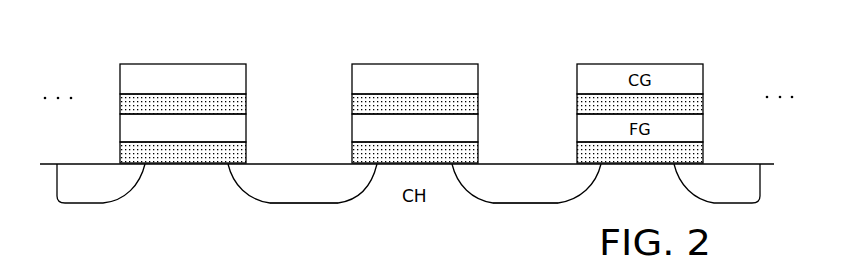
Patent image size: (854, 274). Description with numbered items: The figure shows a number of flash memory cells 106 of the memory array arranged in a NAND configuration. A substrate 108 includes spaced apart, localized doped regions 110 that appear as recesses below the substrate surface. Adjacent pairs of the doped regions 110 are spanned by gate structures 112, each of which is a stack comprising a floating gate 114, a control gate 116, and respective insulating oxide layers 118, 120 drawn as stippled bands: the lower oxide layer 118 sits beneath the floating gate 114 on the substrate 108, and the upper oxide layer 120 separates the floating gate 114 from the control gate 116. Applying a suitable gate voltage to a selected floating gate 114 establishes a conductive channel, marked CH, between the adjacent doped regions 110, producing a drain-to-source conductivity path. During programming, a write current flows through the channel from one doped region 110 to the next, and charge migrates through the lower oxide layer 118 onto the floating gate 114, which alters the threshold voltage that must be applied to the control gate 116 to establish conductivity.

The flash memory cells 106 is at (170, 27).
The substrate 108 is at (192, 211).
The doped regions 110 is at (308, 204).
The gate structures 112 is at (427, 84).
The floating gate 114 is at (352, 128).
The control gate 116 is at (415, 63).
The lower oxide layer 118 is at (479, 152).
The insulating oxide layer 120 is at (479, 105).